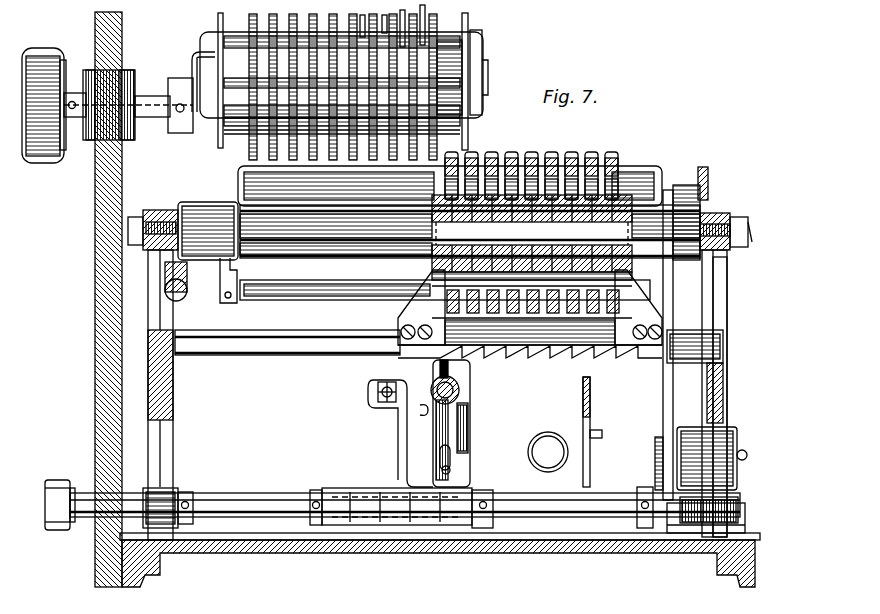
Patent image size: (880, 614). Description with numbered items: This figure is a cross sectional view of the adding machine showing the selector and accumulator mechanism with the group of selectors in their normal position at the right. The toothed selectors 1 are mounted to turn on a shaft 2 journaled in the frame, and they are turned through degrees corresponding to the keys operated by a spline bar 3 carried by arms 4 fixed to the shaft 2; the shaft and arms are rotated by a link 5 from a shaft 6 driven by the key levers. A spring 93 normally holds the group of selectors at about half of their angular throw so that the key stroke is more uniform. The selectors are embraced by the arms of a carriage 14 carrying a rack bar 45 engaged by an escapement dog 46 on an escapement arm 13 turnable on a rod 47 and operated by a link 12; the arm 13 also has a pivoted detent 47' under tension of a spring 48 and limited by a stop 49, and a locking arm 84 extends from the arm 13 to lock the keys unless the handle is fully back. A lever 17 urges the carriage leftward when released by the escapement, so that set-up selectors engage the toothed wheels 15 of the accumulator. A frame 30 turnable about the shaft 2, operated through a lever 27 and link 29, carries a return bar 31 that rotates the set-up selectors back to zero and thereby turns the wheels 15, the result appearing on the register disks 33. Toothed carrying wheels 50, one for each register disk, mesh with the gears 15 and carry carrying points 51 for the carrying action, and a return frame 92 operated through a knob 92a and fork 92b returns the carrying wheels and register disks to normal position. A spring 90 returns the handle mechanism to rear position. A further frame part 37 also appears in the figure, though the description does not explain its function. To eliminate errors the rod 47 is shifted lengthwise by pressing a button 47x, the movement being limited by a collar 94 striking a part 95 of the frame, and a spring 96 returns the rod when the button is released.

The knob 92a is at (40, 60).
The fork 92b is at (192, 62).
The return frame 92 is at (484, 55).
The carrying points 51 is at (426, 8).
The carrying wheels 50 is at (437, 22).
The register disks 33 is at (422, 100).
The toothed wheels 15 is at (252, 140).
The toothed selectors 1 is at (553, 165).
The frame 30 is at (633, 180).
The shaft 2 is at (330, 230).
The return bar 31 is at (373, 200).
The carriage 14 is at (432, 265).
The rack bar 45 is at (580, 345).
The spline bar 3 is at (352, 284).
The arms 4 is at (228, 275).
The spring 93 is at (172, 290).
The link 29 is at (667, 386).
The shaft 6 is at (682, 195).
The link 5 is at (710, 172).
The lever 17 is at (712, 345).
The lever 27 is at (662, 467).
The collar 94 is at (642, 487).
The spring 96 is at (740, 495).
The part of the frame 95 is at (692, 535).
The rod 47 is at (405, 538).
The button 47x is at (58, 533).
The locking arm 84 is at (470, 528).
The escapement dog 46 is at (440, 436).
The escapement arm 13 is at (461, 366).
The pivoted detent 47' is at (473, 388).
The spring 48 is at (468, 425).
The stop 49 is at (424, 410).
The link 12 is at (383, 390).
The spring 90 is at (538, 462).
The plate 37 is at (583, 409).